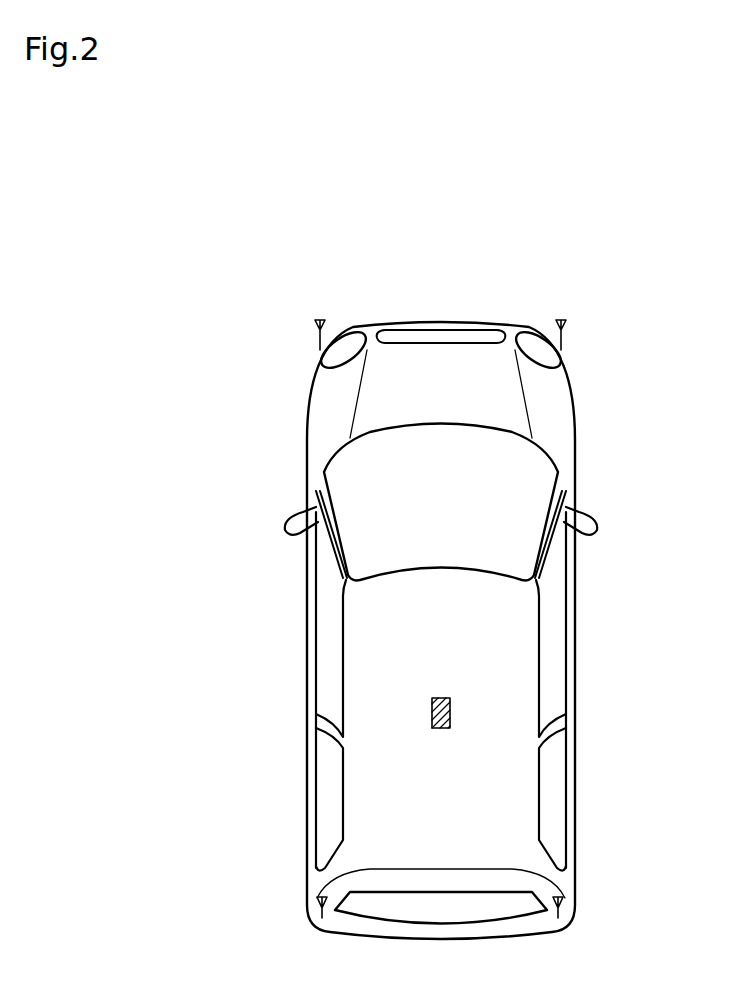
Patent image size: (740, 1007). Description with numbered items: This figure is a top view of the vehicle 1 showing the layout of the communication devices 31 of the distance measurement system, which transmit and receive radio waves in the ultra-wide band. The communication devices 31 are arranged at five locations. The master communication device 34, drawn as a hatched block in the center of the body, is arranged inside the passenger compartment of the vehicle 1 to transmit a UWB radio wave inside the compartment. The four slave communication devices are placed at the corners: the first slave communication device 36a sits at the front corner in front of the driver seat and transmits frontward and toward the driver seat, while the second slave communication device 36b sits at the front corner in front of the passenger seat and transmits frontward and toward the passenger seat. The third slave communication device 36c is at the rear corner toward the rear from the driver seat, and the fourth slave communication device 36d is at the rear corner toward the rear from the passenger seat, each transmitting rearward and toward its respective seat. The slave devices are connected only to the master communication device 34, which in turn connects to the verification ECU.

The vehicle 1 is at (576, 440).
The communication device 31 is at (490, 626).
The master communication device 34 is at (441, 728).
The first slave communication device 36a is at (561, 320).
The second slave communication device 36b is at (320, 320).
The third slave communication device 36c is at (558, 918).
The fourth slave communication device 36d is at (322, 918).